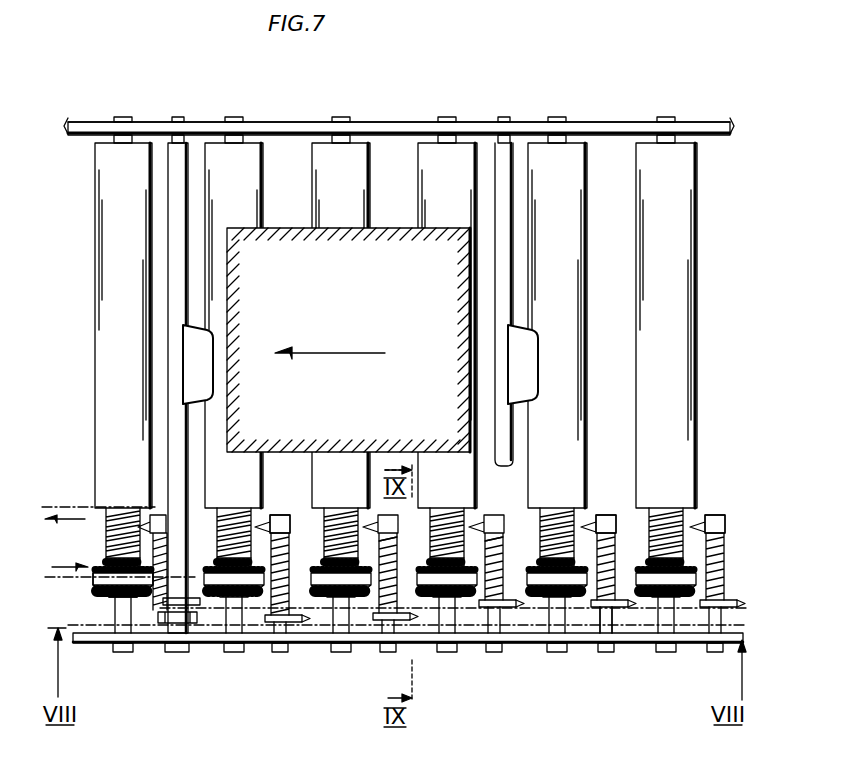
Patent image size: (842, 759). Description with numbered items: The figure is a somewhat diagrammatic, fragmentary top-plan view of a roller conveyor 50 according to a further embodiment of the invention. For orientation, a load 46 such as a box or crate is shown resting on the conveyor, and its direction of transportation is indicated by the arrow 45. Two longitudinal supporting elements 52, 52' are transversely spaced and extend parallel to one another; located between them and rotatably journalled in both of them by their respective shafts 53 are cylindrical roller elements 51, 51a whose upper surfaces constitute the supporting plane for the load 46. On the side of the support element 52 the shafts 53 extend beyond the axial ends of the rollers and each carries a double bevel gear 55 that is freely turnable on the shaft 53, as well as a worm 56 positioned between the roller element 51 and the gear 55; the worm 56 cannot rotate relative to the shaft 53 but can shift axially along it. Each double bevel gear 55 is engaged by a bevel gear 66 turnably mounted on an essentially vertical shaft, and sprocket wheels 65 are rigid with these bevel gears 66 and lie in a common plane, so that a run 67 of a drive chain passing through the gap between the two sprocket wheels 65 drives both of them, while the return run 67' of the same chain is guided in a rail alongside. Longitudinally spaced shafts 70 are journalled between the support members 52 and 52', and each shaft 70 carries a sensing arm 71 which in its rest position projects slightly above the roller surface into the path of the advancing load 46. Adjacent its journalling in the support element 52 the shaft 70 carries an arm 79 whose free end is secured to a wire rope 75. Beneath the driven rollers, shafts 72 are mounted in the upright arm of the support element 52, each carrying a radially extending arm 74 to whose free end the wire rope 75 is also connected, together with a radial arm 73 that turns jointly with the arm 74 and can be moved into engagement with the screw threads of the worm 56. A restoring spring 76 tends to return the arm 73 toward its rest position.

The arrow 45 is at (334, 345).
The load 46 is at (470, 278).
The roller conveyor 50 is at (637, 114).
The roller element 51 is at (418, 160).
The roller element 51a is at (98, 207).
The longitudinal supporting element 52 is at (408, 660).
The longitudinal supporting element 52' is at (399, 102).
The shaft 53 is at (560, 117).
The double bevel gear 55 is at (337, 600).
The worm 56 is at (235, 520).
The sprocket wheel 65 is at (108, 546).
The bevel gear 66 is at (108, 590).
The run of drive chain 67 is at (390, 594).
The return run of chain 67' is at (96, 490).
The shaft 70 is at (184, 133).
The sensing arm 71 is at (190, 372).
The shaft 72 is at (281, 652).
The radial arm 73 is at (280, 520).
The radially extending arm 74 is at (600, 540).
The wire rope 75 is at (590, 625).
The restoring spring 76 is at (380, 600).
The arm 79 is at (182, 607).